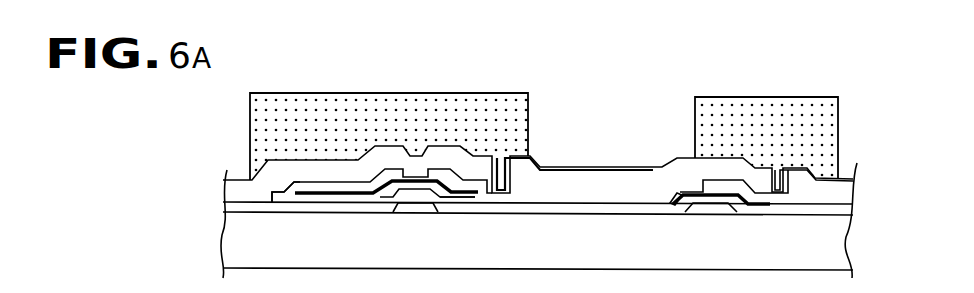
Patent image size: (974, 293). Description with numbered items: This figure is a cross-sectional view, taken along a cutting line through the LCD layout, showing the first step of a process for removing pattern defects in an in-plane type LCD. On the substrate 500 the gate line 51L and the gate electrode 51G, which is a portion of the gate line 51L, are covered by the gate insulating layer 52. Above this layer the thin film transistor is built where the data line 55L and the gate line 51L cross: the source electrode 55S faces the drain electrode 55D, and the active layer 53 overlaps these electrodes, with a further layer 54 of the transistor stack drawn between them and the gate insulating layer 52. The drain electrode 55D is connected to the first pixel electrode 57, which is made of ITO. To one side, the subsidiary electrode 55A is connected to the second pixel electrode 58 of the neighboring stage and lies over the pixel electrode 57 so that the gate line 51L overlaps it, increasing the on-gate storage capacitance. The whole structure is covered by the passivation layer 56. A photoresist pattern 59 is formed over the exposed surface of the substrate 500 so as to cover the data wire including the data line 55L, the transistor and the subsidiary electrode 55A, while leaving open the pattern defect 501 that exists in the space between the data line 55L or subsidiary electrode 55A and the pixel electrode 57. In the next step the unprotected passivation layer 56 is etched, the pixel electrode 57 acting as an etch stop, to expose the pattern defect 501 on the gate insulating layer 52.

The substrate 500 is at (833, 255).
The gate insulating layer 52 is at (848, 210).
The passivation layer 56 is at (847, 192).
The photoresist pattern 59 is at (458, 97).
The pixel electrode 57 is at (557, 165).
The second pixel electrode 58 is at (838, 178).
The data line 55L is at (296, 184).
The source electrode 55S is at (362, 190).
The drain electrode 55D is at (505, 202).
The semiconductor layer 54 is at (470, 198).
The active layer 53 is at (462, 200).
The gate electrode 51G is at (411, 212).
The pattern defect 501 is at (668, 214).
The gate line 51L is at (714, 210).
The subsidiary electrode 55A is at (768, 204).